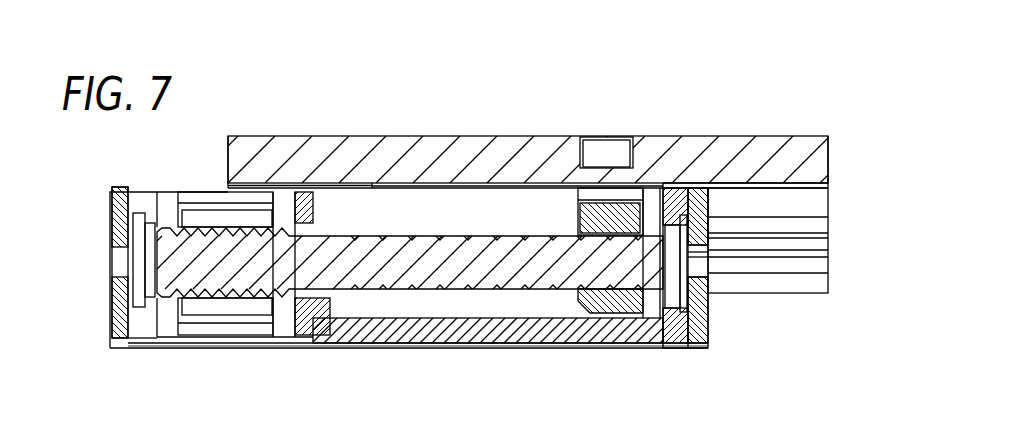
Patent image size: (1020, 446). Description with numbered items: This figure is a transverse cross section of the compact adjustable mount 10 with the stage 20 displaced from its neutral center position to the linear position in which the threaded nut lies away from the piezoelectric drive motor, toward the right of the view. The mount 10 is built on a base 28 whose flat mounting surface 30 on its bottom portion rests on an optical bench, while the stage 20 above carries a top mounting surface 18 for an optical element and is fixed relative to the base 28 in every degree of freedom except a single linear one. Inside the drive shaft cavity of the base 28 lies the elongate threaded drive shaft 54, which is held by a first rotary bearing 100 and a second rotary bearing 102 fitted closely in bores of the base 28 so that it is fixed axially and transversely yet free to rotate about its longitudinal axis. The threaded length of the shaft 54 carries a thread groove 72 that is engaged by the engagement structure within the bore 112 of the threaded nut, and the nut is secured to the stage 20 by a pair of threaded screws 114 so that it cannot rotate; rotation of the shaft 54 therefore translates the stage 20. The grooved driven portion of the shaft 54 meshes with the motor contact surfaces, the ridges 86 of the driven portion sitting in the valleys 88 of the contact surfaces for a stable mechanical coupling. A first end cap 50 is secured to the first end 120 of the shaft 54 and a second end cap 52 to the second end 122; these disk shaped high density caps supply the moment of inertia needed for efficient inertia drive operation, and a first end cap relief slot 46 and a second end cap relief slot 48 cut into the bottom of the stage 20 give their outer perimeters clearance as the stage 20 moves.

The compact adjustable mount 10 is at (323, 95).
The top mounting surface 18 is at (513, 136).
The stage 20 is at (240, 136).
The base 28 is at (380, 348).
The mounting surface 30 is at (605, 350).
The first end cap relief slot 46 is at (770, 183).
The second end cap relief slot 48 is at (372, 186).
The first end cap 50 is at (707, 325).
The second end cap 52 is at (117, 310).
The threaded drive shaft 54 is at (478, 258).
The thread groove 72 is at (430, 240).
The ridges 86 is at (190, 300).
The valleys 88 is at (210, 300).
The first rotary bearing 100 is at (675, 292).
The second rotary bearing 102 is at (148, 300).
The bore 112 is at (598, 289).
The threaded screws 114 is at (605, 147).
The first end 120 is at (700, 262).
The second end 122 is at (120, 260).